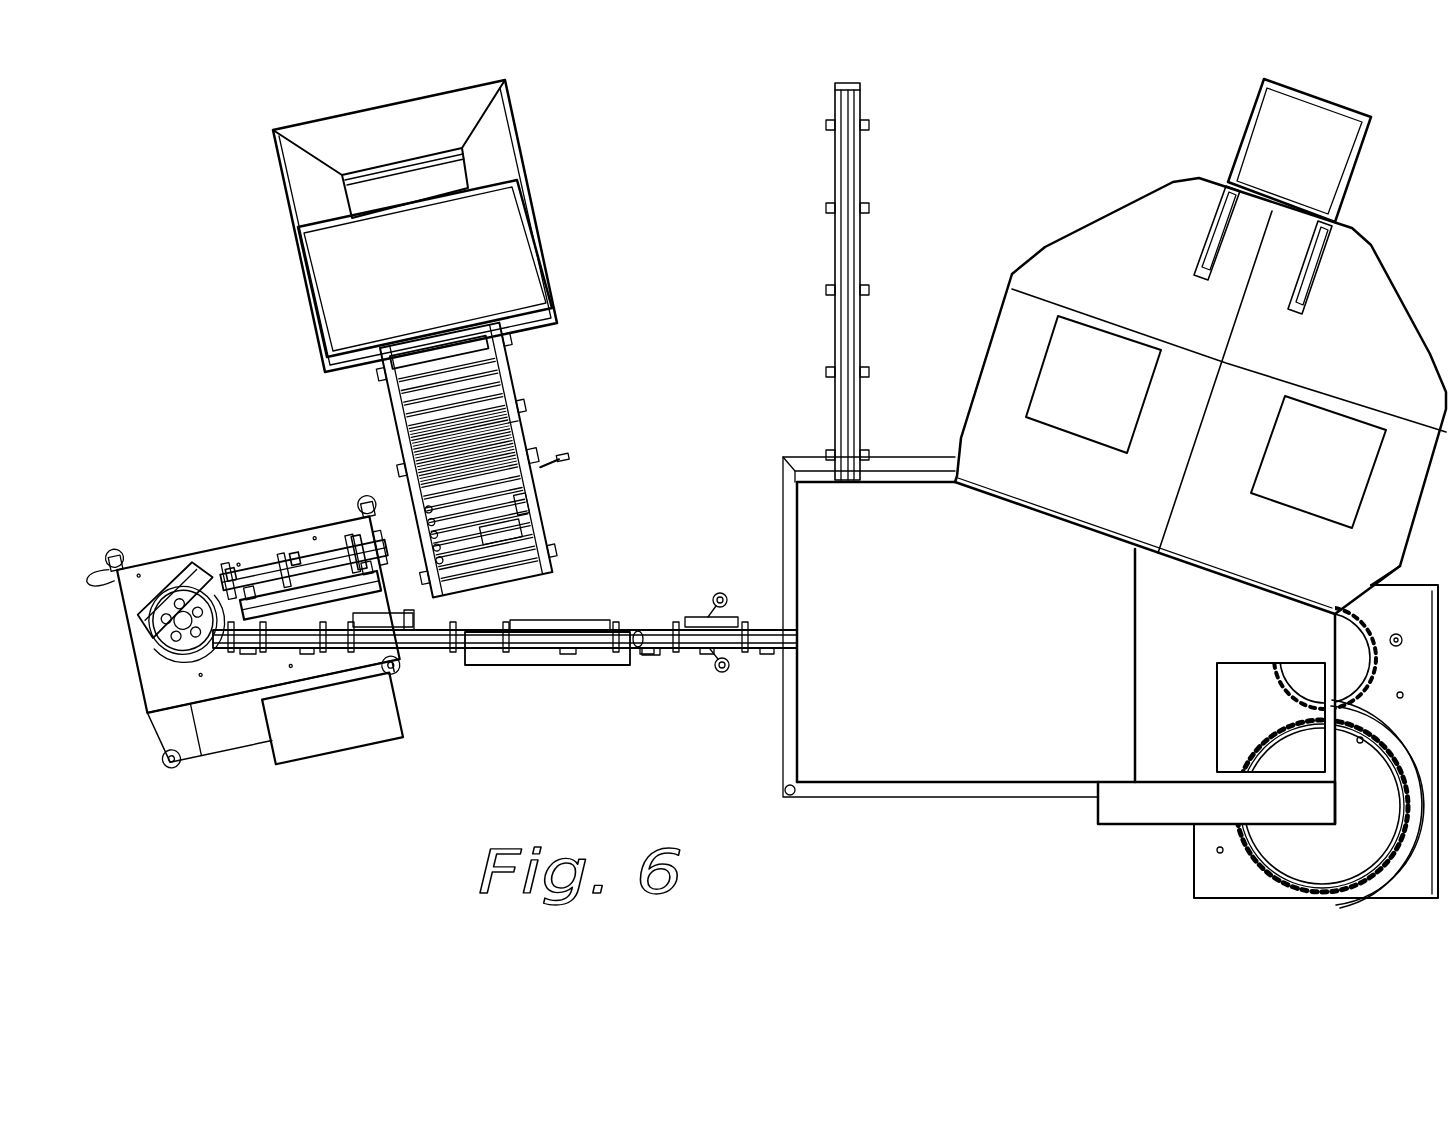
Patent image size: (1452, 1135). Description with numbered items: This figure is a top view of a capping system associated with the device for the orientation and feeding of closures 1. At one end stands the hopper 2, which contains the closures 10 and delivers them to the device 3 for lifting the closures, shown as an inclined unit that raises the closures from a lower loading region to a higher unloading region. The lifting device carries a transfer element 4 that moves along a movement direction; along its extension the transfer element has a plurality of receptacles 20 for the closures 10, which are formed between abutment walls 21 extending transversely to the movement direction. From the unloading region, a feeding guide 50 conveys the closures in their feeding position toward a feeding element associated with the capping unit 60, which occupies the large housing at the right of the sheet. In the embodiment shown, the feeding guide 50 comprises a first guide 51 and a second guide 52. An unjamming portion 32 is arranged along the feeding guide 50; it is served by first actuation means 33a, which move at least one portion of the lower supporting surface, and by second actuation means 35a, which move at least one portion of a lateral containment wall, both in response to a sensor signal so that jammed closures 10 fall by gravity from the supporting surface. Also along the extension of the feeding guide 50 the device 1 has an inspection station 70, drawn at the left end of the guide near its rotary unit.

The device for the orientation and feeding of closures 1 is at (648, 374).
The hopper 2 is at (492, 150).
The device for lifting the closures 3 is at (491, 461).
The transfer element 4 is at (514, 459).
The closures 10 is at (430, 520).
The receptacles 20 is at (523, 503).
The abutment walls 21 is at (512, 535).
The unjamming portion 32 is at (342, 562).
The first actuation means 33a is at (388, 578).
The second actuation means 35a is at (222, 565).
The feeding guide 50 is at (501, 614).
The first guide 51 is at (247, 592).
The second guide 52 is at (645, 655).
The capping unit 60 is at (1010, 826).
The inspection station 70 is at (351, 595).